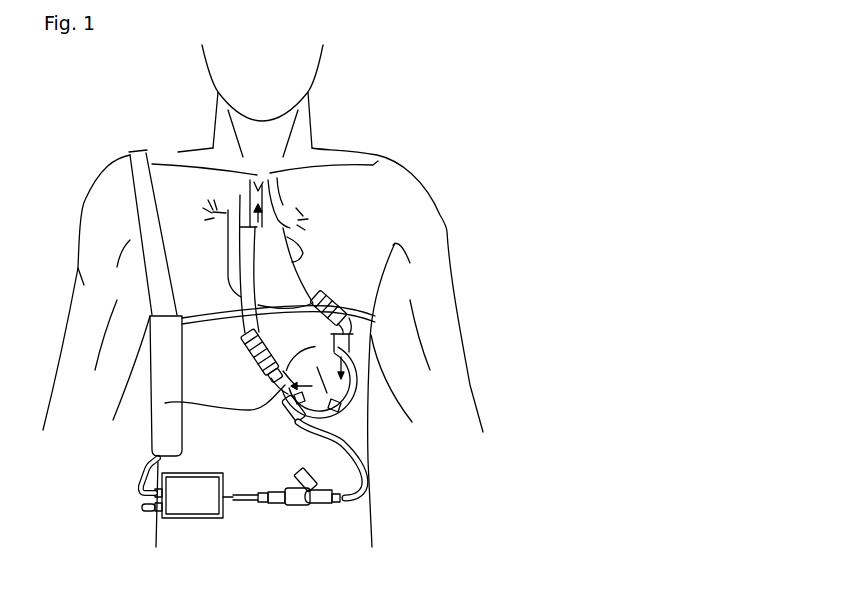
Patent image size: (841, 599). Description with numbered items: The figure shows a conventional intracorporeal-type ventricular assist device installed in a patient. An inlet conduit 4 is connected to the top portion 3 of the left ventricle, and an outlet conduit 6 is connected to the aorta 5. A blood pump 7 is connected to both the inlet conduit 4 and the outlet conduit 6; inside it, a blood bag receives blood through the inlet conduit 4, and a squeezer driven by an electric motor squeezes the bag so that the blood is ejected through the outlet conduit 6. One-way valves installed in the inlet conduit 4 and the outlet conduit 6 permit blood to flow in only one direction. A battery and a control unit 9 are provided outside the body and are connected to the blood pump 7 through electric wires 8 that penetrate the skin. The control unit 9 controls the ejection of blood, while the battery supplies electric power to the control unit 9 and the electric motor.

The top portion of the left ventricle 3 is at (320, 300).
The inlet conduit 4 is at (350, 349).
The aorta 5 is at (253, 213).
The outlet conduit 6 is at (165, 403).
The blood pump 7 is at (350, 402).
The electric wires 8 is at (366, 482).
The control unit 9 is at (192, 518).